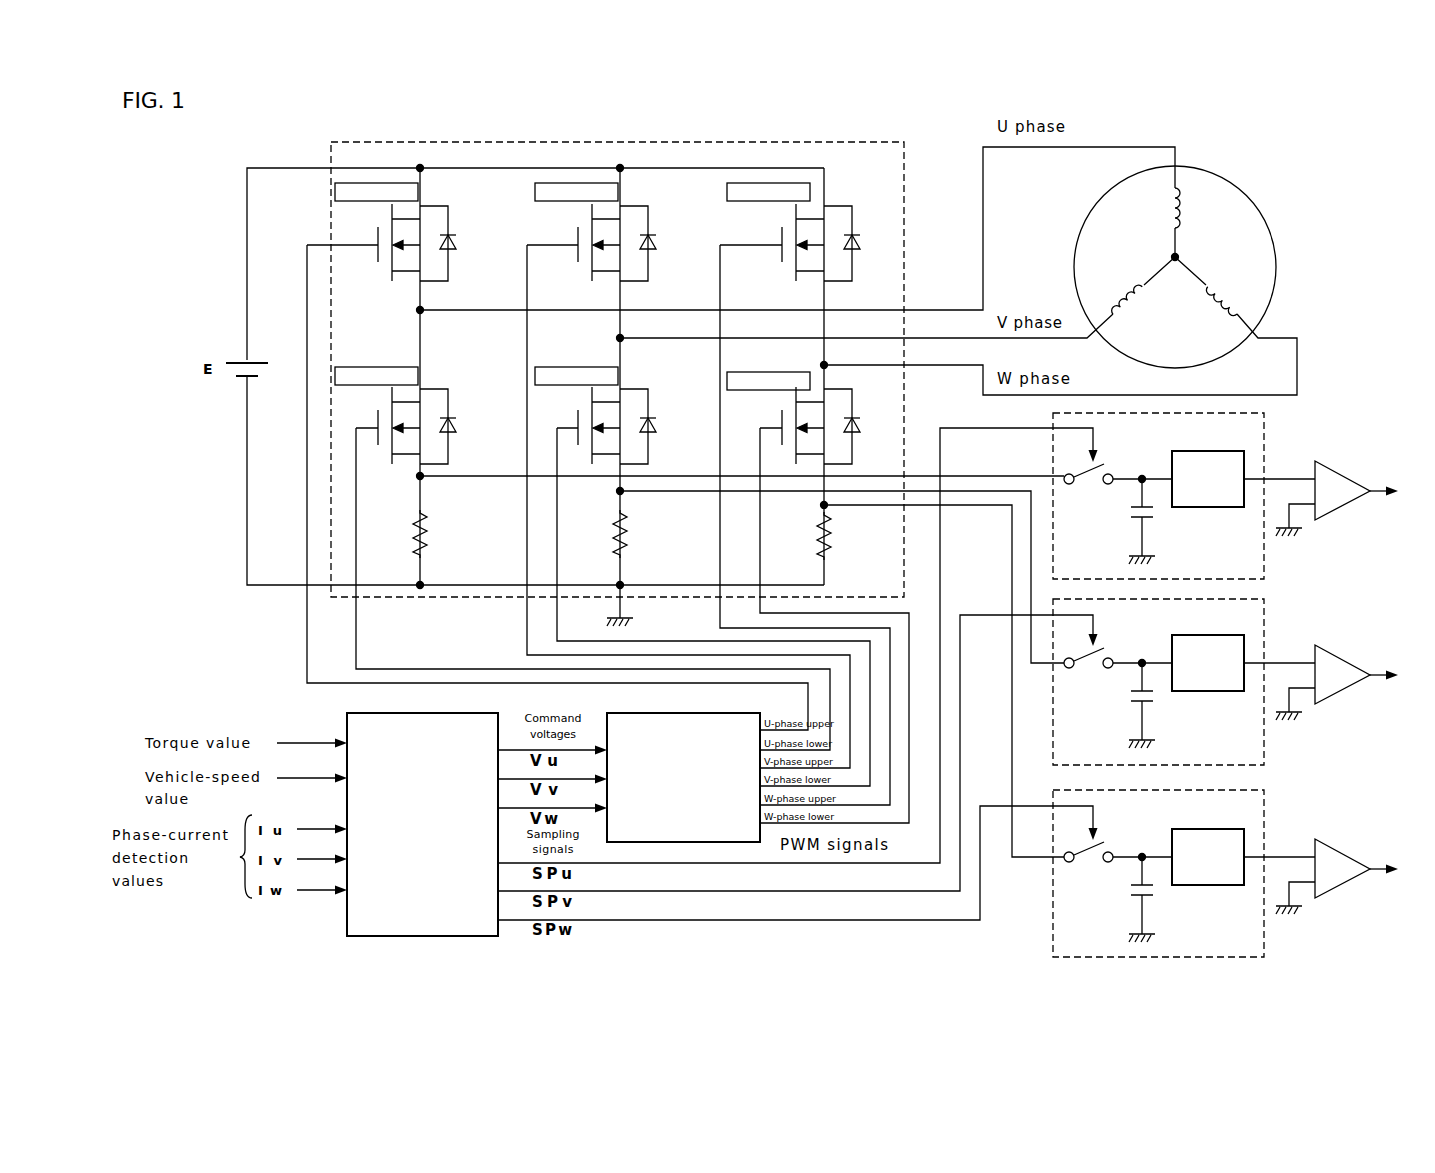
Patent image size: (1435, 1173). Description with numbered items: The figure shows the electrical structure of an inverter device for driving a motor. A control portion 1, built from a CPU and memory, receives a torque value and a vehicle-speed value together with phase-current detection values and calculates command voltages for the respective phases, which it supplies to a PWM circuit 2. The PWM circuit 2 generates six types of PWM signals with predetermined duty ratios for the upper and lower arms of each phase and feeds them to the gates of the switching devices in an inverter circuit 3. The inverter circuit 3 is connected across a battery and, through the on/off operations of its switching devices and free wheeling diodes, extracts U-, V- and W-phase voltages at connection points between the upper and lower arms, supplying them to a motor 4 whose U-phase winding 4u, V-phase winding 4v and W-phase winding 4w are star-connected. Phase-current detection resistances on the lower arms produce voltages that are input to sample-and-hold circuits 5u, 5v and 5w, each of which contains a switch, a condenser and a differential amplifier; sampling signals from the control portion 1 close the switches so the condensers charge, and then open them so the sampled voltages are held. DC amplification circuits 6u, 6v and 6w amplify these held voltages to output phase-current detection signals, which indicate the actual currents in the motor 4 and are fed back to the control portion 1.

The control portion 1 is at (352, 713).
The PWM circuit 2 is at (623, 713).
The inverter circuit 3 is at (827, 141).
The motor 4 is at (1264, 200).
The U-phase winding 4u is at (1194, 222).
The V-phase winding 4v is at (1117, 293).
The W-phase winding 4w is at (1228, 295).
The sample-and-hold circuit 5u is at (1266, 454).
The sample-and-hold circuit 5v is at (1266, 638).
The sample-and-hold circuit 5w is at (1266, 830).
The DC amplification circuit 6u is at (1346, 477).
The DC amplification circuit 6v is at (1346, 661).
The DC amplification circuit 6w is at (1346, 855).